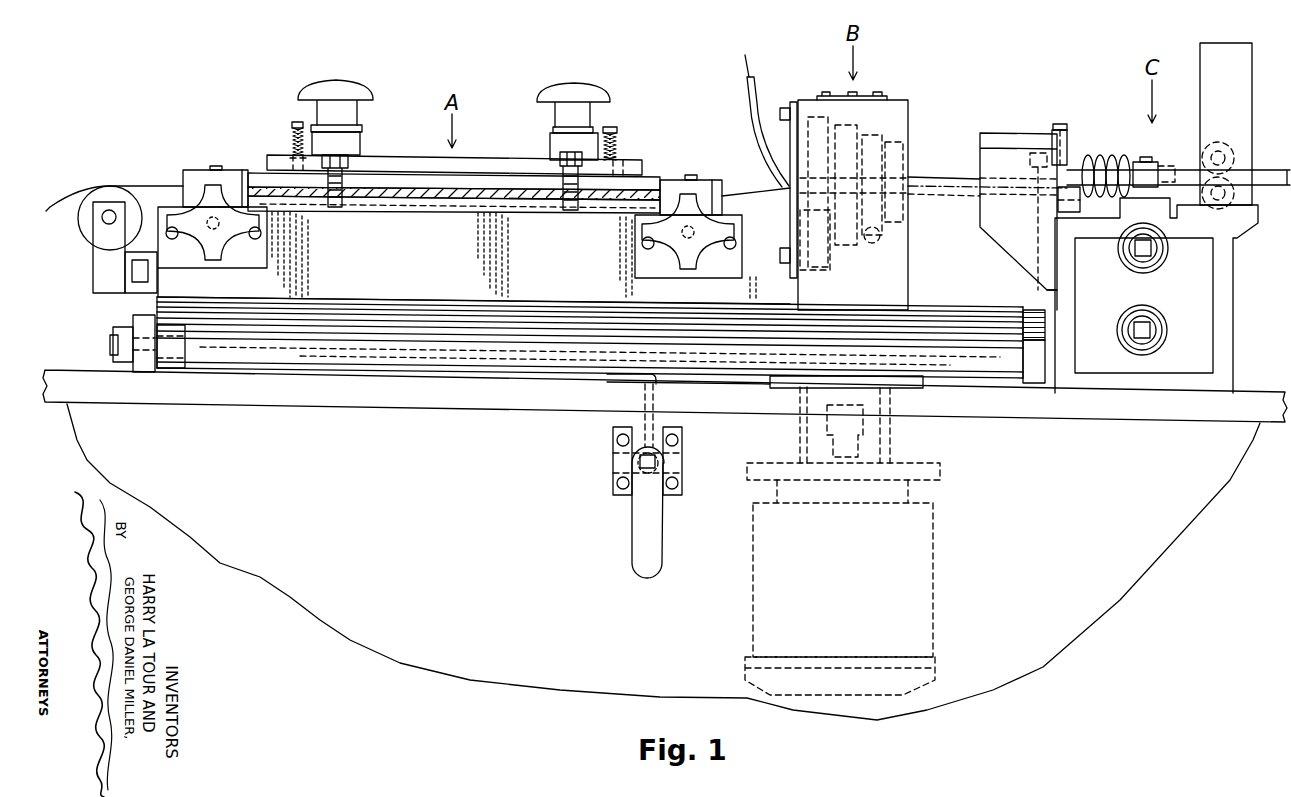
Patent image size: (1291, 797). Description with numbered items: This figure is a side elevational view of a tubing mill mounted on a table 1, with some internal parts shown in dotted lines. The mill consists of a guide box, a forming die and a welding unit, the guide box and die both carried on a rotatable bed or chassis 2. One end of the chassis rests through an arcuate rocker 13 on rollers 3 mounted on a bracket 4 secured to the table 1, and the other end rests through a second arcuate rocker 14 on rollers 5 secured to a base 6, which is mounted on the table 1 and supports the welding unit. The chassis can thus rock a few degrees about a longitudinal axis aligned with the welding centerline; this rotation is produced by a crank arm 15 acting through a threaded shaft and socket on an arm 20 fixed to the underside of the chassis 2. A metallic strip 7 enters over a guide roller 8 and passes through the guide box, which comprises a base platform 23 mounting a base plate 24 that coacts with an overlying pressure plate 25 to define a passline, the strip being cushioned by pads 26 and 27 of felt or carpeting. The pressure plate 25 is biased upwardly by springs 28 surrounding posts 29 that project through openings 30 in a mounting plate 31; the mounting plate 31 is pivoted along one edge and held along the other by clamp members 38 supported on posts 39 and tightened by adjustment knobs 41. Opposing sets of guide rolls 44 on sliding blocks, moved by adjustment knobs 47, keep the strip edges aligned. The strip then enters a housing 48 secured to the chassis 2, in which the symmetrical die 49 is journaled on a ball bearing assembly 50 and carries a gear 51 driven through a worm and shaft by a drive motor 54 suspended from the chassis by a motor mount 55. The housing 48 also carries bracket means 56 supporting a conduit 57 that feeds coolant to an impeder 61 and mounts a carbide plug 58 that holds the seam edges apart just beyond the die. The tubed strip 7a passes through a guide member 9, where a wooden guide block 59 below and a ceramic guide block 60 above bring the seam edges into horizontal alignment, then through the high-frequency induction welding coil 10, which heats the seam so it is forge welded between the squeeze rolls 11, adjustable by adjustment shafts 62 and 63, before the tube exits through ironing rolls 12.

The table 1 is at (358, 395).
The rotatable bed or chassis 2 is at (463, 357).
The rollers 3 is at (175, 350).
The bracket 4 is at (145, 367).
The rollers 5 is at (1037, 367).
The base 6 is at (1227, 330).
The metallic strip 7 is at (52, 208).
The tubed strip 7a is at (962, 196).
The guide roller 8 is at (85, 240).
The guide member 9 is at (1010, 140).
The high-frequency induction welding coil 10 is at (1098, 163).
The squeeze rolls 11 is at (1155, 163).
The ironing rolls 12 is at (1218, 143).
The arcuate rocker 13 is at (182, 297).
The arcuate rocker 14 is at (1030, 310).
The crank arm 15 is at (650, 534).
The arm 20 is at (656, 400).
The base platform 23 is at (398, 284).
The base plate 24 is at (423, 203).
The pressure plate 25 is at (462, 183).
The pad 26 is at (498, 198).
The pad 27 is at (513, 190).
The springs 28 is at (293, 132).
The posts 29 is at (293, 122).
The opening 30 is at (287, 158).
The mounting plate 31 is at (402, 160).
The clamp members 38 is at (352, 146).
The posts 39 is at (332, 210).
The adjustment knobs 41 is at (355, 88).
The guide rolls 44 is at (200, 178).
The adjustment knobs 47 is at (227, 237).
The housing 48 is at (895, 112).
The die 49 is at (810, 223).
The ball bearing assembly 50 is at (893, 143).
The gear 51 is at (863, 120).
The drive motor 54 is at (920, 600).
The motor mount 55 is at (890, 446).
The bracket means 56 is at (787, 153).
The conduit 57 is at (752, 127).
The carbide plug 58 is at (923, 187).
The wooden guide block 59 is at (1072, 193).
The ceramic guide block 60 is at (1068, 162).
The impeder 61 is at (1168, 168).
The adjustment shaft 62 is at (1153, 250).
The adjustment shaft 63 is at (1145, 327).